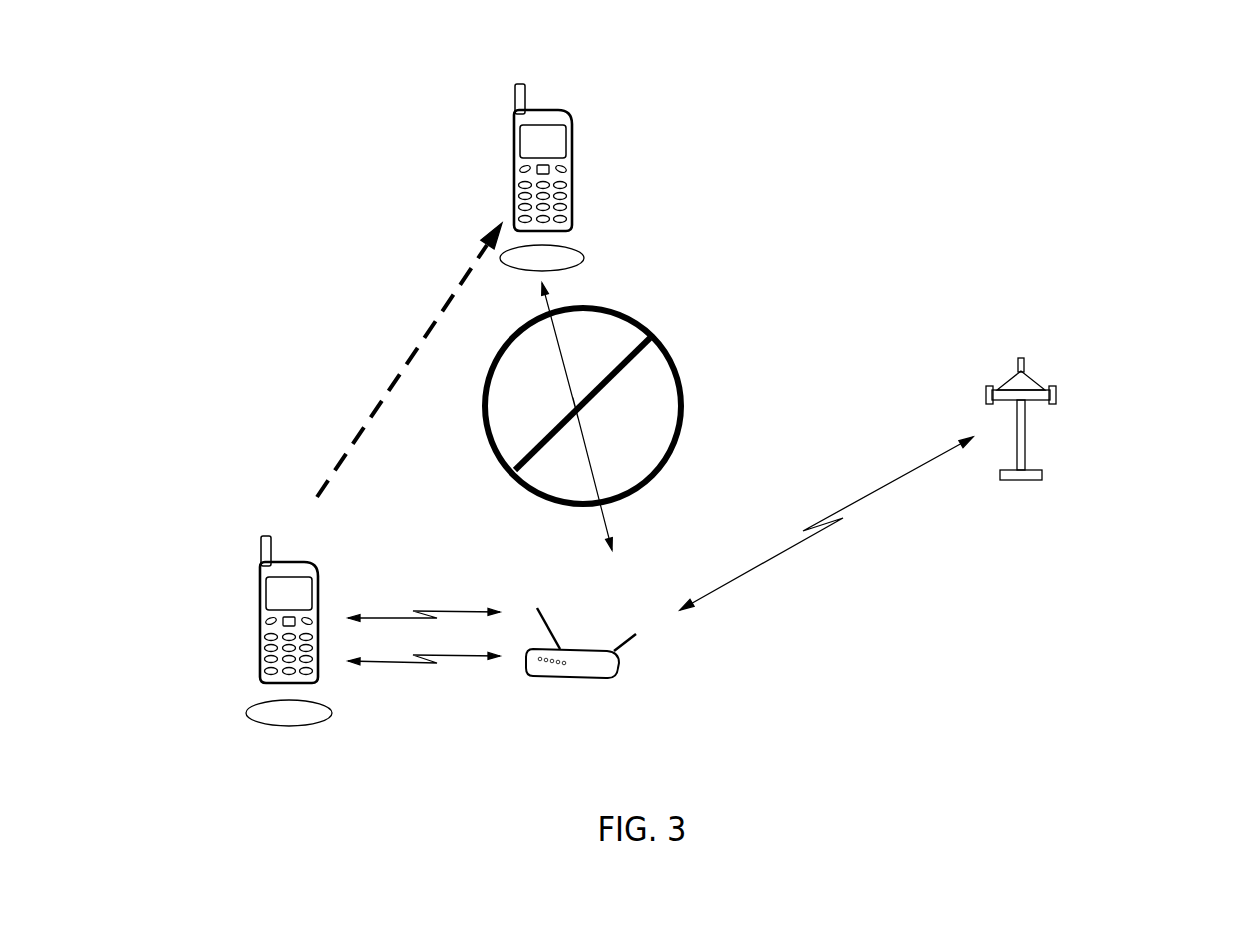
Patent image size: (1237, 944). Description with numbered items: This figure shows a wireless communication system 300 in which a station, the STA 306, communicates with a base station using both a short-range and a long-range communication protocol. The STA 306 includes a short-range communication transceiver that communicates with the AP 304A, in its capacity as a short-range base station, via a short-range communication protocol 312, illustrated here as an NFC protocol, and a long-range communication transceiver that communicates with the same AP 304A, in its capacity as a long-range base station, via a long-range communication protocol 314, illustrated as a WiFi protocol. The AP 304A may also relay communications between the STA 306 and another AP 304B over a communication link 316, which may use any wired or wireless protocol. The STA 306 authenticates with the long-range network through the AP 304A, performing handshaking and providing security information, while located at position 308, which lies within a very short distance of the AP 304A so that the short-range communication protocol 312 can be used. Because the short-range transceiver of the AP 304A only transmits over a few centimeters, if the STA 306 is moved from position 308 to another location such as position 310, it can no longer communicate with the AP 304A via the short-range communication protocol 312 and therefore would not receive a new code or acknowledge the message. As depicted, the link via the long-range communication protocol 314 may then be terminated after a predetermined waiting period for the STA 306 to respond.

The wireless communication system 300 is at (1153, 120).
The access point 304A is at (596, 648).
The access point 304B is at (1021, 357).
The station 306 is at (553, 108).
The position 308 is at (290, 726).
The position 310 is at (580, 265).
The short-range communication protocol 312 is at (466, 613).
The long-range communication protocol 314 is at (598, 500).
The communication link 316 is at (836, 511).